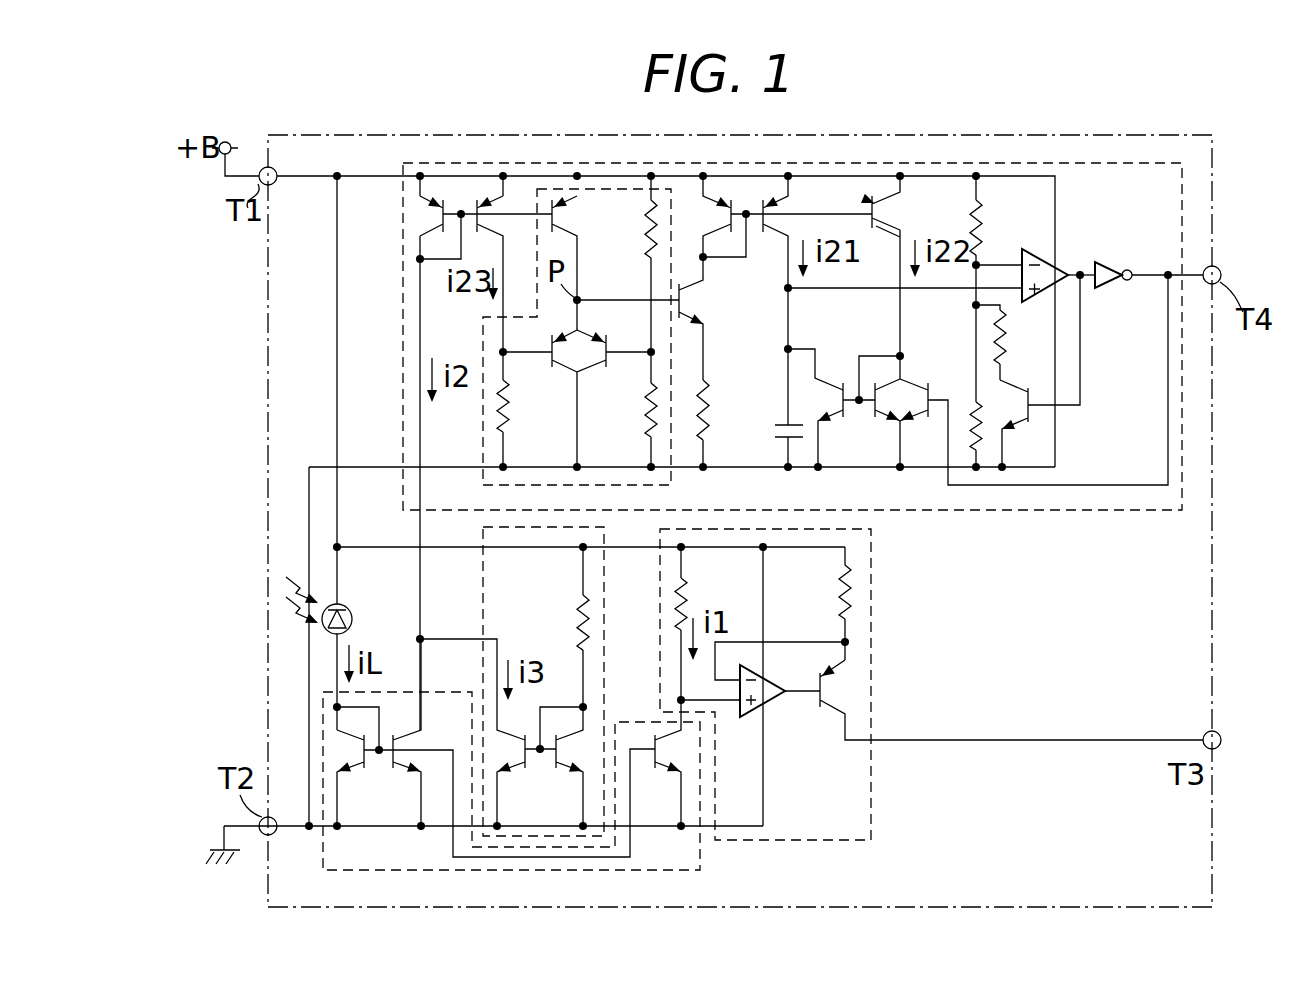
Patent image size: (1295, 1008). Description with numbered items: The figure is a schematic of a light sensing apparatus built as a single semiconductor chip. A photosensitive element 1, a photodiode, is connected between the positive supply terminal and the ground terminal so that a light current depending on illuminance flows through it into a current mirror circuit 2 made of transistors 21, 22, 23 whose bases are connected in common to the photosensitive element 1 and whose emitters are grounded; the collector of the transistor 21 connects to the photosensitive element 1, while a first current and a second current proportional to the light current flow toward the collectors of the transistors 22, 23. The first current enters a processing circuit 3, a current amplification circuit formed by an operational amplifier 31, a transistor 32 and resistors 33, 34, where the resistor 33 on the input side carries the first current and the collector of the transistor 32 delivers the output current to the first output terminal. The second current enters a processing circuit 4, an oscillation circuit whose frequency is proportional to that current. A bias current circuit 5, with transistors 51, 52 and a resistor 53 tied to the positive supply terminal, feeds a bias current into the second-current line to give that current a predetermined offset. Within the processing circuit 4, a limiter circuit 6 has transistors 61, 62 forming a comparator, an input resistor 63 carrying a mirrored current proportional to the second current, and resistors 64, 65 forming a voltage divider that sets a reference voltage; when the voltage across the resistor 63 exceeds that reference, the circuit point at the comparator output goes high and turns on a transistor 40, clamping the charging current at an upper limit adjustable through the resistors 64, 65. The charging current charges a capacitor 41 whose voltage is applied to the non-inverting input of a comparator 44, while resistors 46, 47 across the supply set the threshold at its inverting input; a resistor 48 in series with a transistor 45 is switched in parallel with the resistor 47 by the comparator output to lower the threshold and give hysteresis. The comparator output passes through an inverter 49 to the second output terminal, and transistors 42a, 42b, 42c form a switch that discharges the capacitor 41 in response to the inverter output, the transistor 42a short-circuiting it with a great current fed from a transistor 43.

The photosensitive element 1 is at (348, 606).
The current mirror circuit 2 is at (384, 870).
The processing circuit 3 is at (824, 841).
The processing circuit 4 is at (1045, 512).
The bias current circuit 5 is at (557, 837).
The limiter circuit 6 is at (483, 335).
The transistor 21 is at (355, 772).
The transistor 22 is at (665, 772).
The transistor 23 is at (406, 772).
The operational amplifier 31 is at (772, 706).
The transistor 32 is at (828, 678).
The resistor 33 is at (690, 606).
The resistor 34 is at (838, 602).
The transistor 40 is at (700, 292).
The capacitor 41 is at (784, 424).
The transistor 42a is at (841, 382).
The transistor 42b is at (884, 410).
The transistor 42c is at (912, 383).
The transistor 43 is at (879, 240).
The comparator 44 is at (1062, 270).
The transistor 45 is at (1014, 400).
The resistor 46 is at (977, 228).
The resistor 47 is at (972, 425).
The resistor 48 is at (1003, 352).
The inverter 49 is at (1114, 258).
The transistor 51 is at (512, 772).
The transistor 52 is at (567, 772).
The resistor 53 is at (577, 610).
The transistor 61 is at (563, 372).
The transistor 62 is at (594, 372).
The resistor 63 is at (505, 428).
The resistor 64 is at (650, 230).
The resistor 65 is at (650, 432).